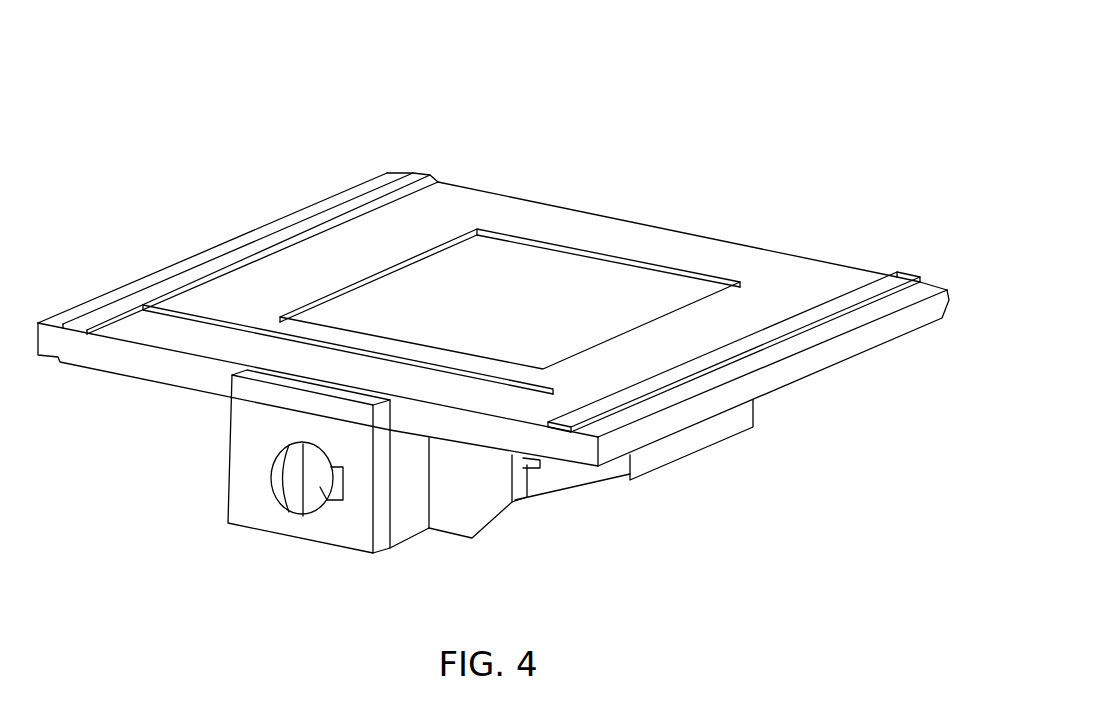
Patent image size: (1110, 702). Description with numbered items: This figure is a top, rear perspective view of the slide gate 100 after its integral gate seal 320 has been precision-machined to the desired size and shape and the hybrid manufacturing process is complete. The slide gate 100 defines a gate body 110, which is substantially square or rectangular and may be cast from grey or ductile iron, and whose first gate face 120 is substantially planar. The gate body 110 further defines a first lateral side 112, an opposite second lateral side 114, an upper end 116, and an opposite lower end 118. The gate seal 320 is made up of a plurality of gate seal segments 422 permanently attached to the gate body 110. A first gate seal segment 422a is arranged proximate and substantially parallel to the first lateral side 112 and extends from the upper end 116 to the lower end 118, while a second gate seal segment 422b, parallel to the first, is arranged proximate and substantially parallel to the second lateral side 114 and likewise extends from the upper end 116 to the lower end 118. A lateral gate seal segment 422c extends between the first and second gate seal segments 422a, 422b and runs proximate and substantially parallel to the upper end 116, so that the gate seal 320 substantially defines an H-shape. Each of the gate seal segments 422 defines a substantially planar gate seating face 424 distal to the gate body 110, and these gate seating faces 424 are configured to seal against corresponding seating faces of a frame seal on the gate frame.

The slide gate 100 is at (770, 90).
The gate body 110 is at (558, 272).
The first lateral side 112 is at (890, 332).
The second lateral side 114 is at (97, 295).
The upper end 116 is at (493, 437).
The lower end 118 is at (694, 237).
The first gate face 120 is at (790, 273).
The gate seal 320 is at (355, 203).
The gate seal segments 422 is at (504, 313).
The first gate seal segment 422a is at (780, 330).
The second gate seal segment 422b is at (248, 248).
The lateral gate seal segment 422c is at (202, 310).
The gate seating face 424 is at (183, 280).